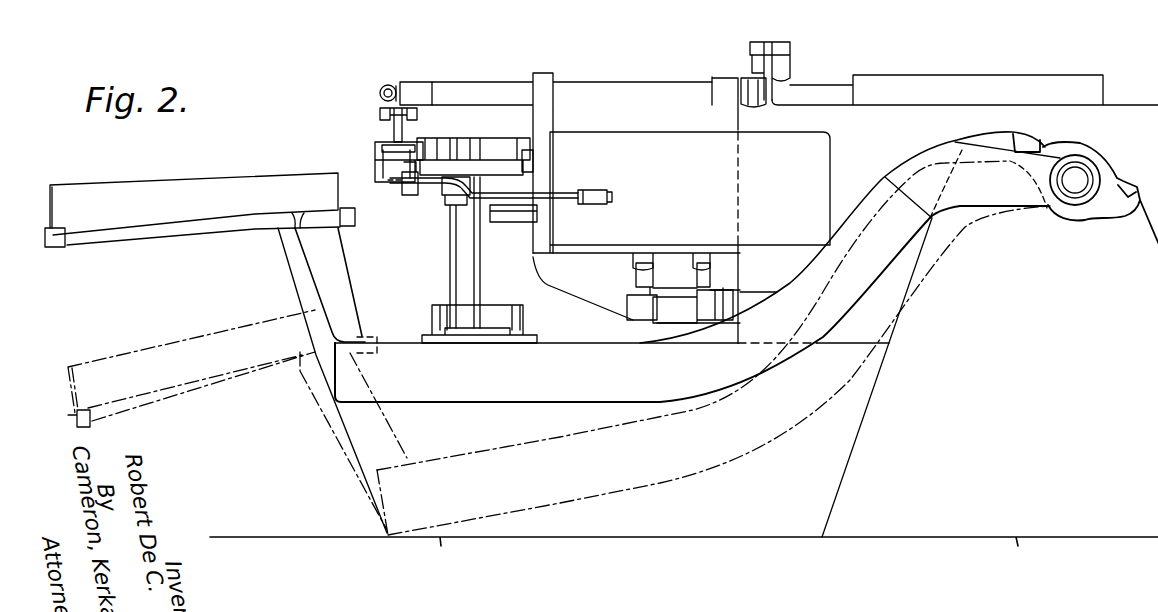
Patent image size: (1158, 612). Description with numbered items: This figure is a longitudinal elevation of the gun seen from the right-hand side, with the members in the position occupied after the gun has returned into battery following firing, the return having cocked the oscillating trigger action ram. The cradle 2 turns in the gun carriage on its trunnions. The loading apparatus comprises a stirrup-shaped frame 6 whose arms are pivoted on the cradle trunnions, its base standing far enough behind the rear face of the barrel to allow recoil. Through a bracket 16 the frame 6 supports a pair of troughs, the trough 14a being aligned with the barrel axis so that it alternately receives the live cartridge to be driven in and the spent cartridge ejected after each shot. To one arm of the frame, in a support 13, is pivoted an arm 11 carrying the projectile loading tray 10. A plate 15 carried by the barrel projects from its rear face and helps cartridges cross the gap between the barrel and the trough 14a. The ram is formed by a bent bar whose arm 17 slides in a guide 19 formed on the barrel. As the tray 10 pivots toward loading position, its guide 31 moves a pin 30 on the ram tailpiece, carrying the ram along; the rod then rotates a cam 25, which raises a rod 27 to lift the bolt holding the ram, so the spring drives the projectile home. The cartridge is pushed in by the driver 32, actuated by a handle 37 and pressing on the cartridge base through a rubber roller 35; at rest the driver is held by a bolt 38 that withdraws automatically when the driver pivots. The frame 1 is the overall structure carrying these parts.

The frame 1 is at (542, 117).
The cradle 2 is at (1113, 108).
The frame 6 is at (436, 404).
The projectile loading tray 10 is at (238, 160).
The arm 11 is at (458, 262).
The support 13 is at (425, 338).
The trough 14a is at (118, 233).
The plate 15 is at (508, 216).
The bracket 16 is at (308, 265).
The arm of the bent bar (ram) 17 is at (414, 86).
The guide 19 is at (551, 82).
The cam 25 is at (755, 106).
The rod 27 is at (752, 75).
The pin 30 is at (393, 139).
The guide 31 is at (374, 151).
The driver 32 is at (549, 192).
The rubber roller 35 is at (404, 199).
The handle 37 is at (433, 157).
The bolt 38 is at (592, 205).